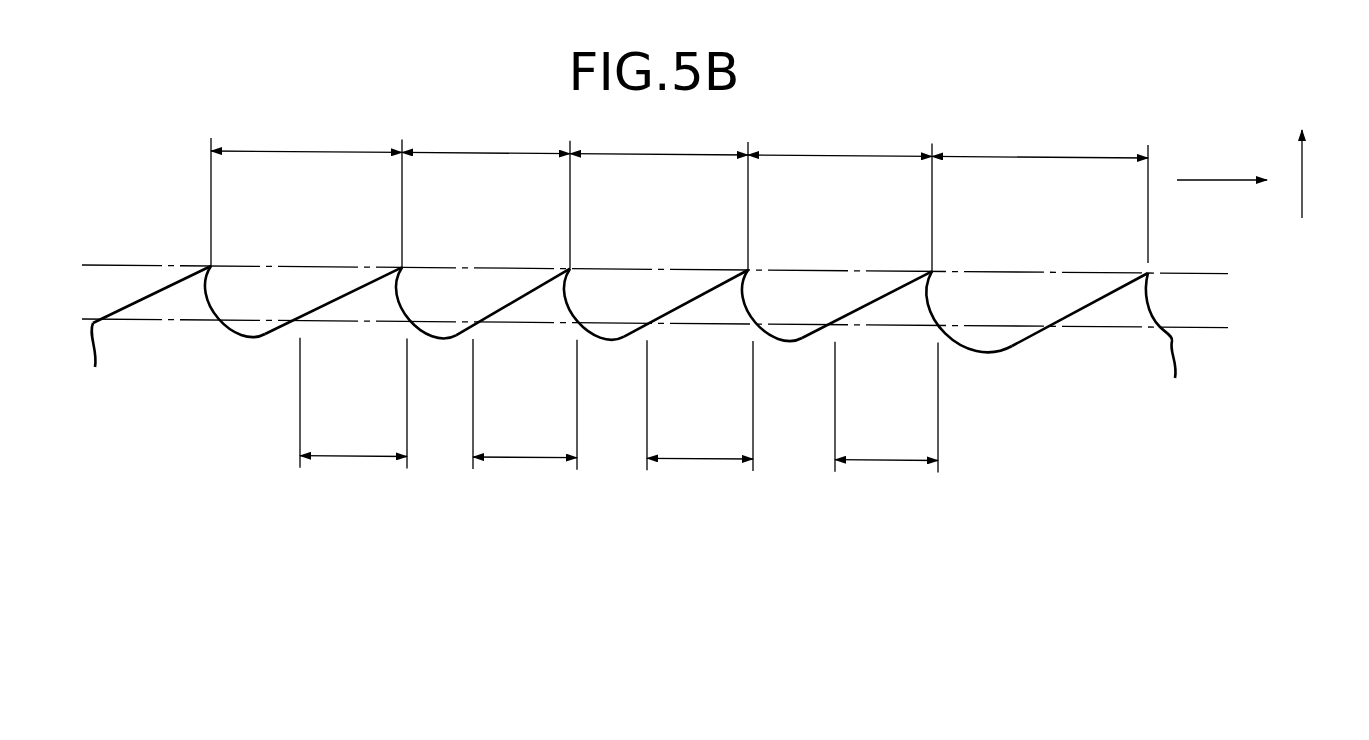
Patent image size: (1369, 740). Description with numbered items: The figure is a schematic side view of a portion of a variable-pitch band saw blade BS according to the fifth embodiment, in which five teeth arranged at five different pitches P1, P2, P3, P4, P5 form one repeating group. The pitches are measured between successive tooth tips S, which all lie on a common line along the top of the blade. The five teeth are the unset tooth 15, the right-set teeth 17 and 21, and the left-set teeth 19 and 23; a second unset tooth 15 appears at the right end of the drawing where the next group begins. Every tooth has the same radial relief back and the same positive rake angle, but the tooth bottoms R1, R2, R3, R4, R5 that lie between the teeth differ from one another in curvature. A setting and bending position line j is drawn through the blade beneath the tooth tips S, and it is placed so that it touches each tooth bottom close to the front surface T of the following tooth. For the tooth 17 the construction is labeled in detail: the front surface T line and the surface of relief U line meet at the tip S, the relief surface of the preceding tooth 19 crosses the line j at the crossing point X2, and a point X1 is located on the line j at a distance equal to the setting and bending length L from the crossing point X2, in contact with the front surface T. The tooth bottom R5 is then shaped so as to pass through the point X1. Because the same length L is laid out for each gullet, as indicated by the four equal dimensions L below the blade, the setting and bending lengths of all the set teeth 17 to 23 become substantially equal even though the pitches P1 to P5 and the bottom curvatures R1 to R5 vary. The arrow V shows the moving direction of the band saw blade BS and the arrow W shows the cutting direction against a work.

The unset tooth 15 is at (192, 284).
The left-set tooth 23 is at (381, 284).
The right-set tooth 21 is at (555, 287).
The left-set tooth 19 is at (725, 288).
The right-set tooth 17 is at (913, 288).
The band saw blade BS is at (527, 100).
The tooth tip S is at (214, 264).
The tooth bottom R1 is at (242, 340).
The tooth bottom R2 is at (435, 337).
The tooth bottom R3 is at (606, 337).
The tooth bottom R4 is at (785, 343).
The tooth bottom R5 is at (972, 354).
The point X1 is at (940, 322).
The crossing point X2 is at (828, 321).
The front surface T is at (929, 316).
The surface of relief U is at (1075, 310).
The moving direction arrow V is at (1217, 178).
The cutting direction arrow W is at (1305, 185).
The setting and bending position line j is at (653, 302).
The setting and bending length L is at (619, 405).
The pitch P1 is at (306, 193).
The pitch P2 is at (486, 194).
The pitch P3 is at (659, 195).
The pitch P4 is at (840, 196).
The pitch P5 is at (1040, 193).